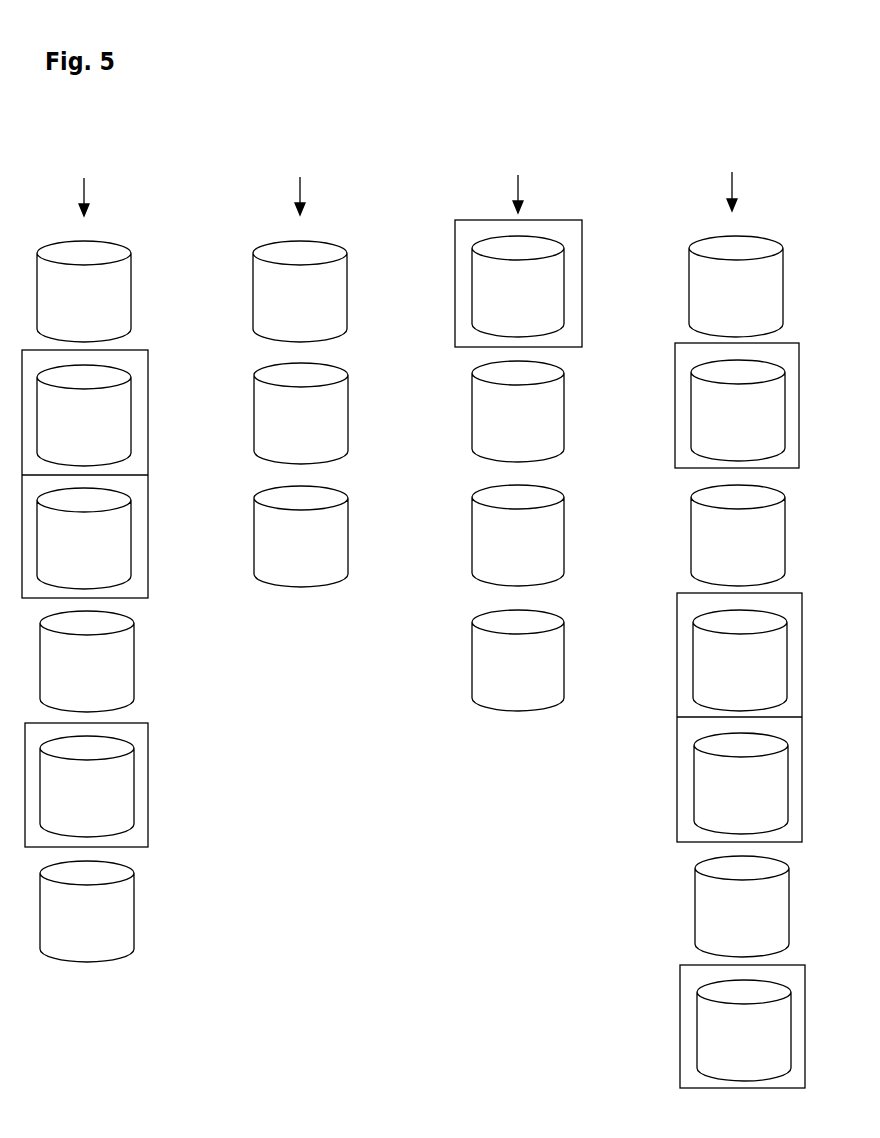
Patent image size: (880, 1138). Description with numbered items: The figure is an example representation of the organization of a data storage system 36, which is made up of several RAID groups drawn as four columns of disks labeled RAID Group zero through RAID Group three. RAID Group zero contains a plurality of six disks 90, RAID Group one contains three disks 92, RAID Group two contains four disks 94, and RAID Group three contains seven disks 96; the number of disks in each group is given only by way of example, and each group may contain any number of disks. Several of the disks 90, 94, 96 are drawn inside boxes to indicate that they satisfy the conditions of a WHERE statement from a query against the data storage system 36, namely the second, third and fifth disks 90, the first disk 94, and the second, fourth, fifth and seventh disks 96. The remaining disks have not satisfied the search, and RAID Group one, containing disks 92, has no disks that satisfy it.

The data storage system 36 is at (762, 71).
The disks 90 is at (85, 601).
The disks 92 is at (300, 414).
The disks 94 is at (518, 473).
The disks 96 is at (740, 658).